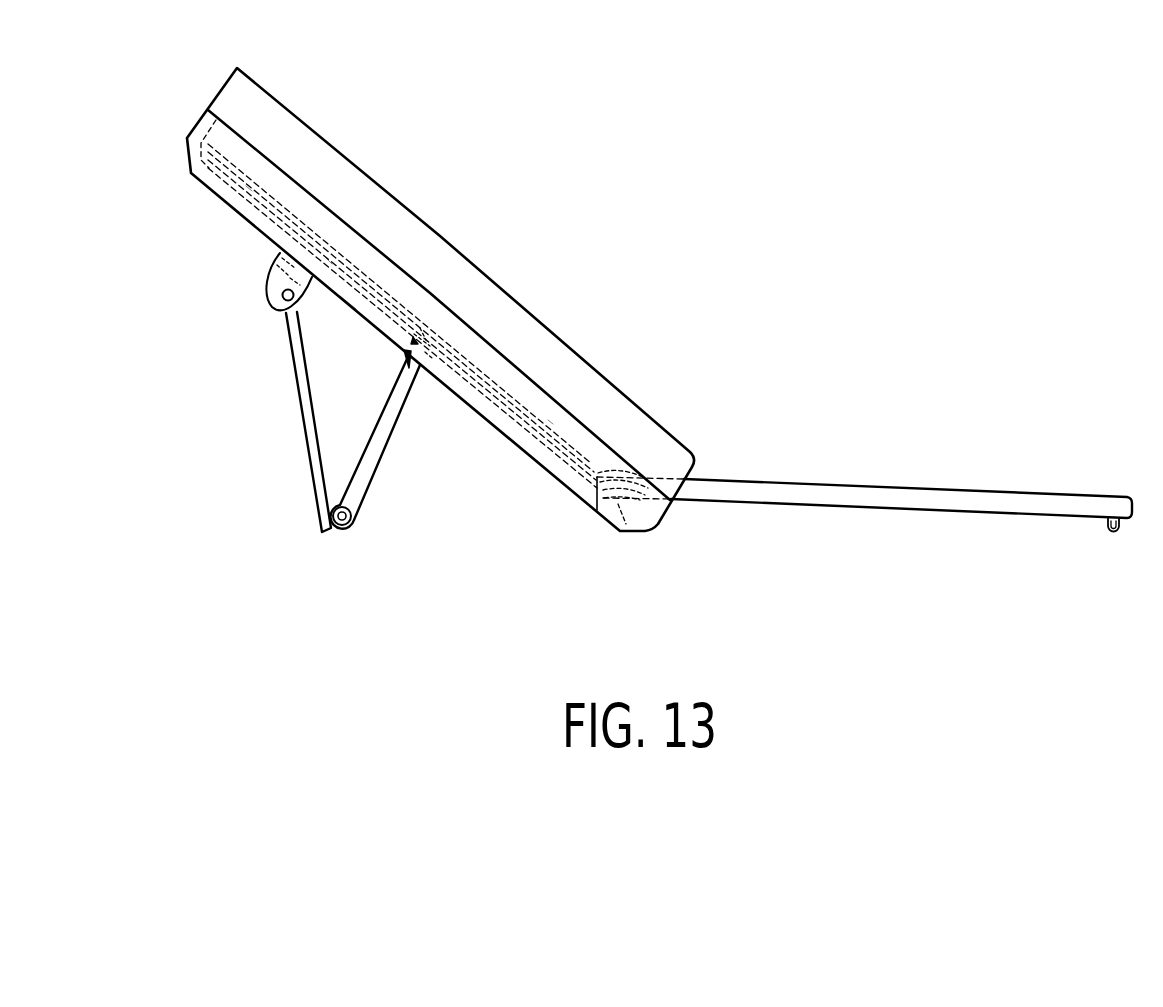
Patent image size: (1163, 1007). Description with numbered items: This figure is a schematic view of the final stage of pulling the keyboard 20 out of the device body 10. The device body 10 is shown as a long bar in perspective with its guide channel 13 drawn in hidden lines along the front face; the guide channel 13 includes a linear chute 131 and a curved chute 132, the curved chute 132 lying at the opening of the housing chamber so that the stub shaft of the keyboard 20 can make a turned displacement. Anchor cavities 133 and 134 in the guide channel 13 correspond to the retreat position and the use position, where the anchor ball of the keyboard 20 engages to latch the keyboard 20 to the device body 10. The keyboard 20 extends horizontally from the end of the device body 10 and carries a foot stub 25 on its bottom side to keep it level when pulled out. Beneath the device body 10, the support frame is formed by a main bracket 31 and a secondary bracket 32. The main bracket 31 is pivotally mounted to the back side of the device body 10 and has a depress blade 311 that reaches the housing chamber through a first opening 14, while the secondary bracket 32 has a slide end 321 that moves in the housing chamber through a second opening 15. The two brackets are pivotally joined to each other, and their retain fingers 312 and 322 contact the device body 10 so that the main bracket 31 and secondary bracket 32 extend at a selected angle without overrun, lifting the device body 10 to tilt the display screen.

The device body 10 is at (433, 218).
The guide channel 13 is at (481, 387).
The linear chute 131 is at (543, 420).
The curved chute 132 is at (327, 260).
The anchor cavity 133 is at (251, 188).
The anchor cavity 134 is at (596, 510).
The first opening 14 is at (270, 241).
The second opening 15 is at (348, 303).
The keyboard 20 is at (968, 485).
The foot stub 25 is at (1113, 532).
The main bracket 31 is at (305, 427).
The depress blade 311 is at (285, 250).
The retain finger 312 is at (308, 300).
The secondary bracket 32 is at (370, 448).
The slide end 321 is at (414, 337).
The retain finger 322 is at (411, 369).